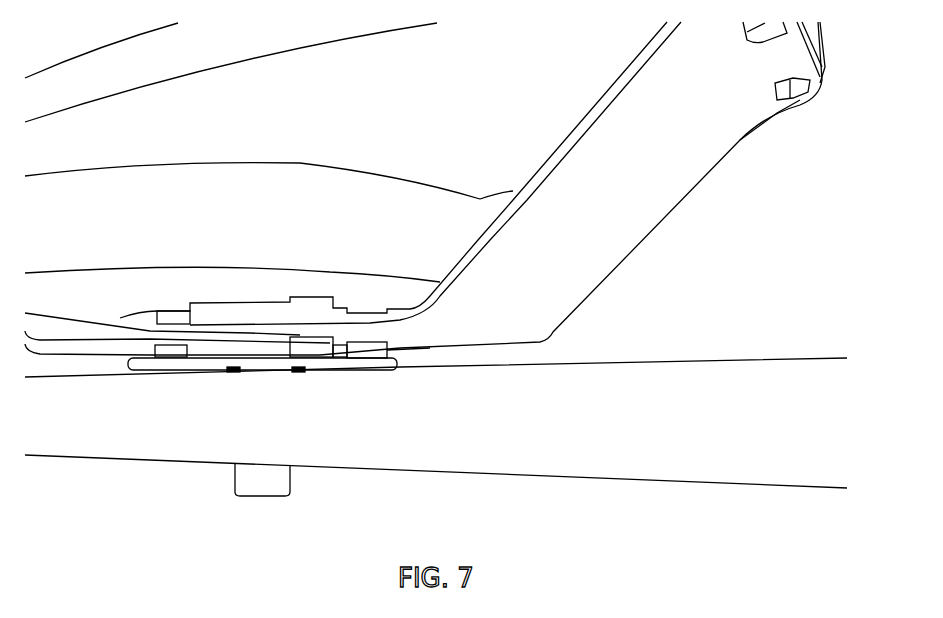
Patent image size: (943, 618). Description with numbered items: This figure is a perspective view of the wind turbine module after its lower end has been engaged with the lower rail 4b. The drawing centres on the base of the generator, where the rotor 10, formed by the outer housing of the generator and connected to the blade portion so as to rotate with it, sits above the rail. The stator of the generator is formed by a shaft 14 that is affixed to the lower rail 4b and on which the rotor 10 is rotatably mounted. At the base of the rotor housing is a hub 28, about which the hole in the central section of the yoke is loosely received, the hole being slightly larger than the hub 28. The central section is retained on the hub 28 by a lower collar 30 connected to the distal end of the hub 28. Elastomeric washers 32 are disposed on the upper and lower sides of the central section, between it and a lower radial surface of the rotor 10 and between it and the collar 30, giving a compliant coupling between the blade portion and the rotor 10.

The rotor 10 is at (240, 200).
The hub 28 is at (233, 315).
The elastomeric washers 32 is at (168, 317).
The lower collar 30 is at (178, 363).
The lower rail 4b is at (513, 426).
The shaft 14 is at (252, 478).